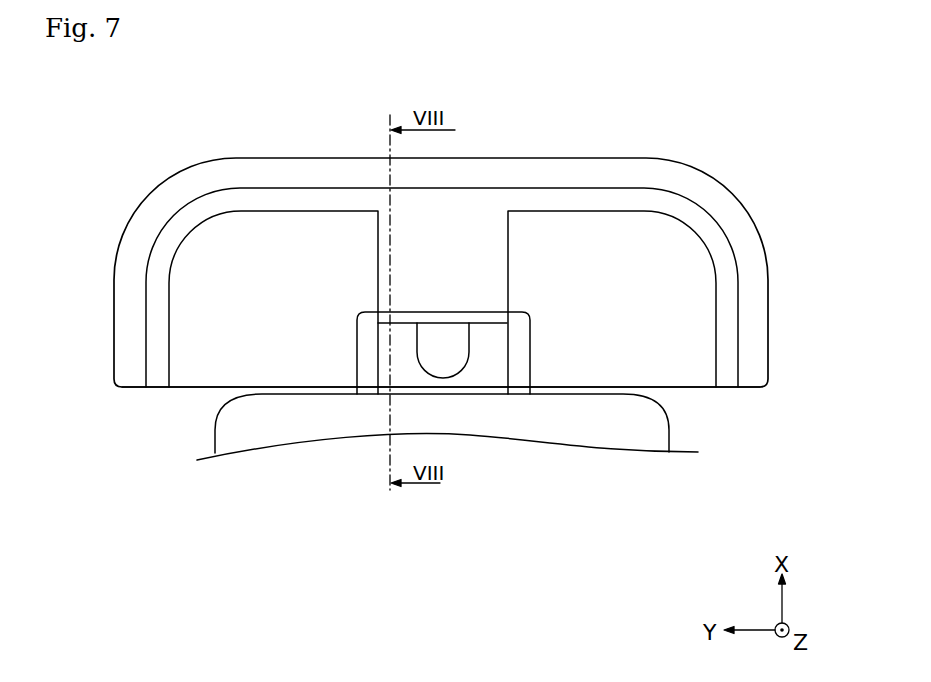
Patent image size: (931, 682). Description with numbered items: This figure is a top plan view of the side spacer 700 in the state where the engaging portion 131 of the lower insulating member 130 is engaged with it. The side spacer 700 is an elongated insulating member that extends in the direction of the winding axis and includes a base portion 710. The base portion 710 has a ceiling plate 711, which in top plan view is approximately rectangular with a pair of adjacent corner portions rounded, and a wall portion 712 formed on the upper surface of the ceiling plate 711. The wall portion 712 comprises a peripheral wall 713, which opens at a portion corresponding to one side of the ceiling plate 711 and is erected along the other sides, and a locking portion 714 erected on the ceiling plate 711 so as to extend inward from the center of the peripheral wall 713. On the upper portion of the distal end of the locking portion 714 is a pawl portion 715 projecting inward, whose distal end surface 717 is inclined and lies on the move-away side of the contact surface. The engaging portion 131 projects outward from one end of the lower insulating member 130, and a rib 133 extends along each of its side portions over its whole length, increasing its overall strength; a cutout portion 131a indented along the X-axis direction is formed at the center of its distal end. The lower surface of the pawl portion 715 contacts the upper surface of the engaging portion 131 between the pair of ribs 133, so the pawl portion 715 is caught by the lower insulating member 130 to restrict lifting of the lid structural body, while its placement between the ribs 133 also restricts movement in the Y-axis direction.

The side spacer 700 is at (449, 250).
The base portion 710 is at (742, 204).
The ceiling plate 711 is at (655, 357).
The wall portion 712 is at (394, 245).
The peripheral wall 713 is at (252, 197).
The locking portion 714 is at (373, 238).
The pawl portion 715 is at (533, 288).
The distal end surface 717 is at (443, 317).
The engaging portion 131 is at (470, 413).
The cutout portion 131a is at (453, 366).
The rib 133 is at (368, 368).
The lower insulating member 130 is at (200, 443).